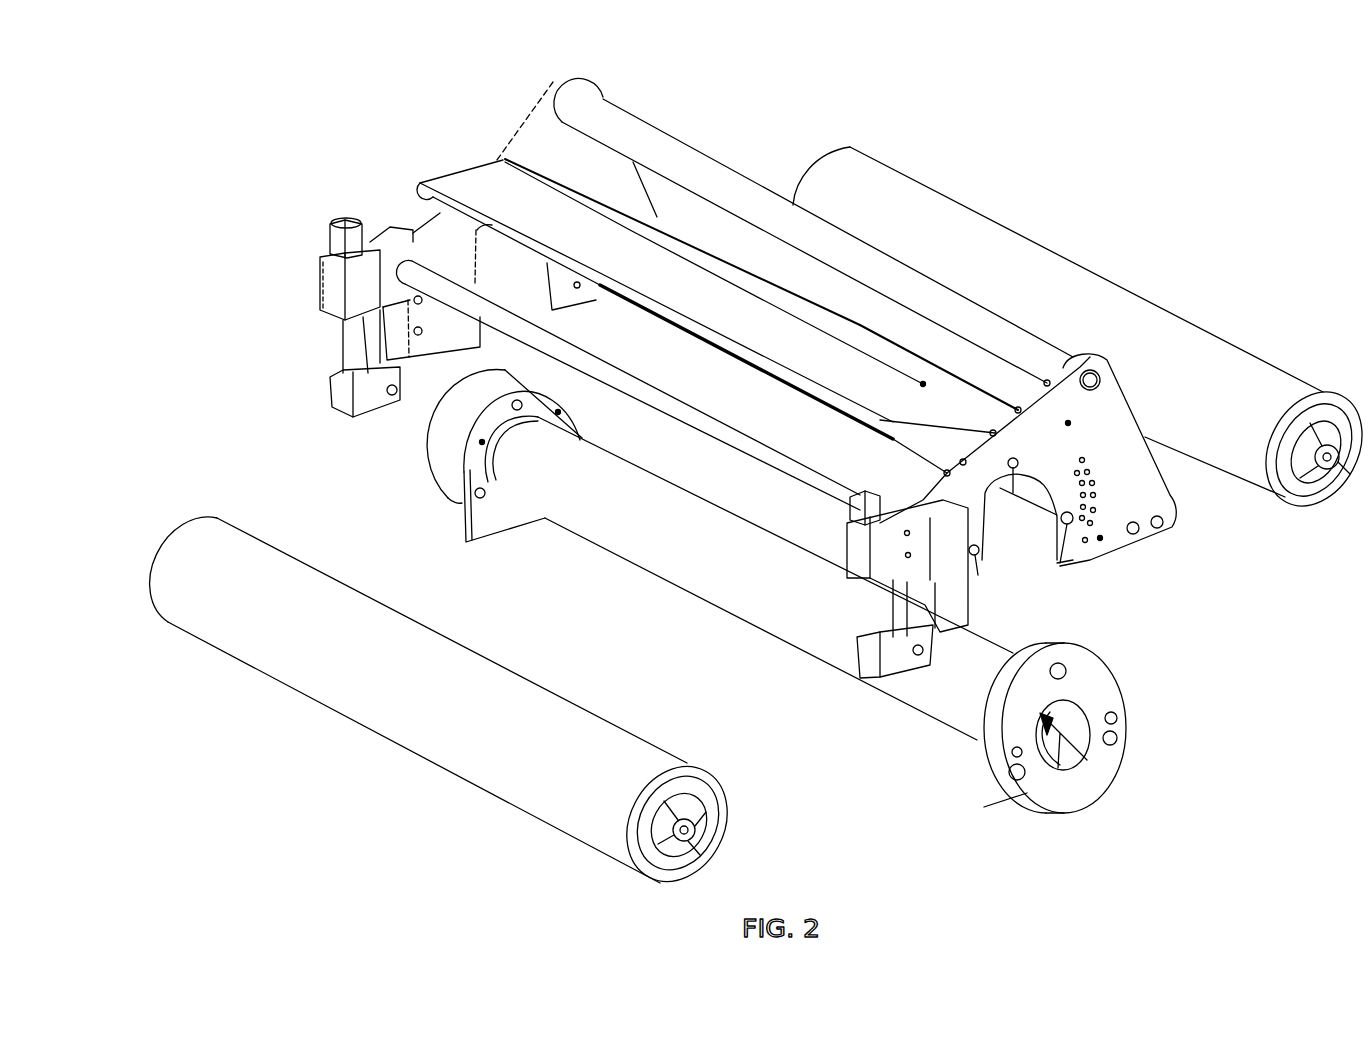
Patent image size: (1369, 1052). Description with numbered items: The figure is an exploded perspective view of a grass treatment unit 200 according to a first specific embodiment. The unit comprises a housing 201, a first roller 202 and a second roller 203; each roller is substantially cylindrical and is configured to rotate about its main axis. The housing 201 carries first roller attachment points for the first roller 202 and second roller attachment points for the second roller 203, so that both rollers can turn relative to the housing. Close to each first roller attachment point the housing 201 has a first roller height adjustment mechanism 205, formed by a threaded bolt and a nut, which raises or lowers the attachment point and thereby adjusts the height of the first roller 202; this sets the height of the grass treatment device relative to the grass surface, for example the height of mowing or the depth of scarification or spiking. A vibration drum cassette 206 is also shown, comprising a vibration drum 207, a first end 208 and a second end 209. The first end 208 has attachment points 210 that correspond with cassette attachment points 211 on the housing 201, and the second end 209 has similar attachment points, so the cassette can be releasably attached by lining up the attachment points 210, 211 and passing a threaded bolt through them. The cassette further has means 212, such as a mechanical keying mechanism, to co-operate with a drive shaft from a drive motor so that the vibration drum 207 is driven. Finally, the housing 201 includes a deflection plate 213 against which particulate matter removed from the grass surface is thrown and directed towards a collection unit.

The grass treatment unit 200 is at (405, 82).
The housing 201 is at (551, 84).
The first roller 202 is at (227, 533).
The second roller 203 is at (926, 182).
The first roller height adjustment mechanism 205 is at (327, 240).
The vibration drum cassette 206 is at (725, 660).
The vibration drum 207 is at (635, 550).
The first end 208 is at (1045, 790).
The second end 209 is at (448, 487).
The attachment points 210 is at (1070, 660).
The cassette attachment points 211 is at (1011, 470).
The means to co-operate with a drive shaft 212 is at (1083, 760).
The deflection plate 213 is at (462, 182).